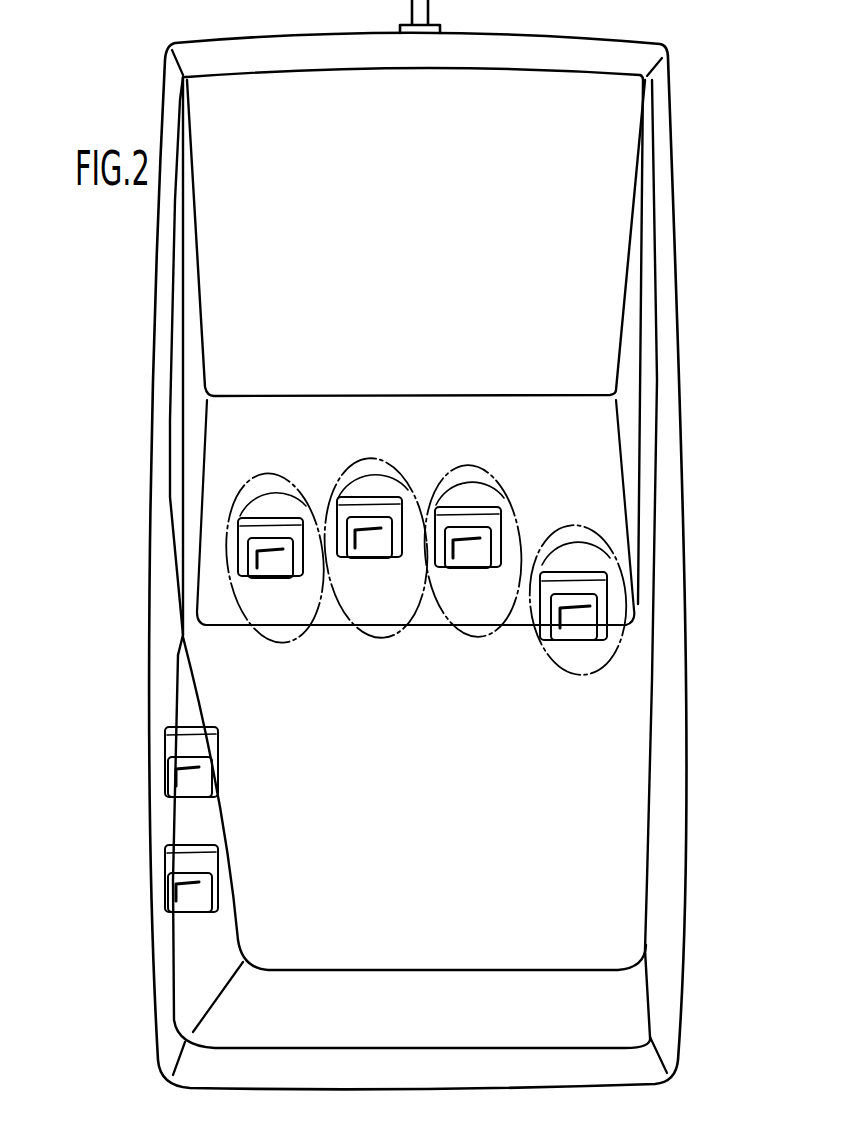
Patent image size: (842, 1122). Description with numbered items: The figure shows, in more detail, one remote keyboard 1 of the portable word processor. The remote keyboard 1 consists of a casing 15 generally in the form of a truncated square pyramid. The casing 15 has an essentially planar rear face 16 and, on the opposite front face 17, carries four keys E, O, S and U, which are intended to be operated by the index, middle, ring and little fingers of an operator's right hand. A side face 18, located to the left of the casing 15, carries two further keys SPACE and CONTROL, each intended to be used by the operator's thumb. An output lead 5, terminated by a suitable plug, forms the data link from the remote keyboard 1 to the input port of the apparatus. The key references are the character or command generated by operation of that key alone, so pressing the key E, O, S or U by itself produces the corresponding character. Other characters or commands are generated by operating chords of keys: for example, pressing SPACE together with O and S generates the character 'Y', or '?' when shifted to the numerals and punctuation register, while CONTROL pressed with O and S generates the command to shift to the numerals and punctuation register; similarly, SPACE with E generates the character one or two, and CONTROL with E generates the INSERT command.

The remote keyboard 1 is at (112, 622).
The output lead 5 is at (430, 10).
The casing 15 is at (688, 862).
The rear face 16 is at (442, 979).
The front face 17 is at (416, 352).
The side face 18 is at (186, 967).
The E key E is at (243, 522).
The O key O is at (393, 512).
The S key S is at (480, 540).
The U key U is at (590, 607).
The SPACE key SPACE is at (168, 758).
The CONTROL key CONTROL is at (168, 877).